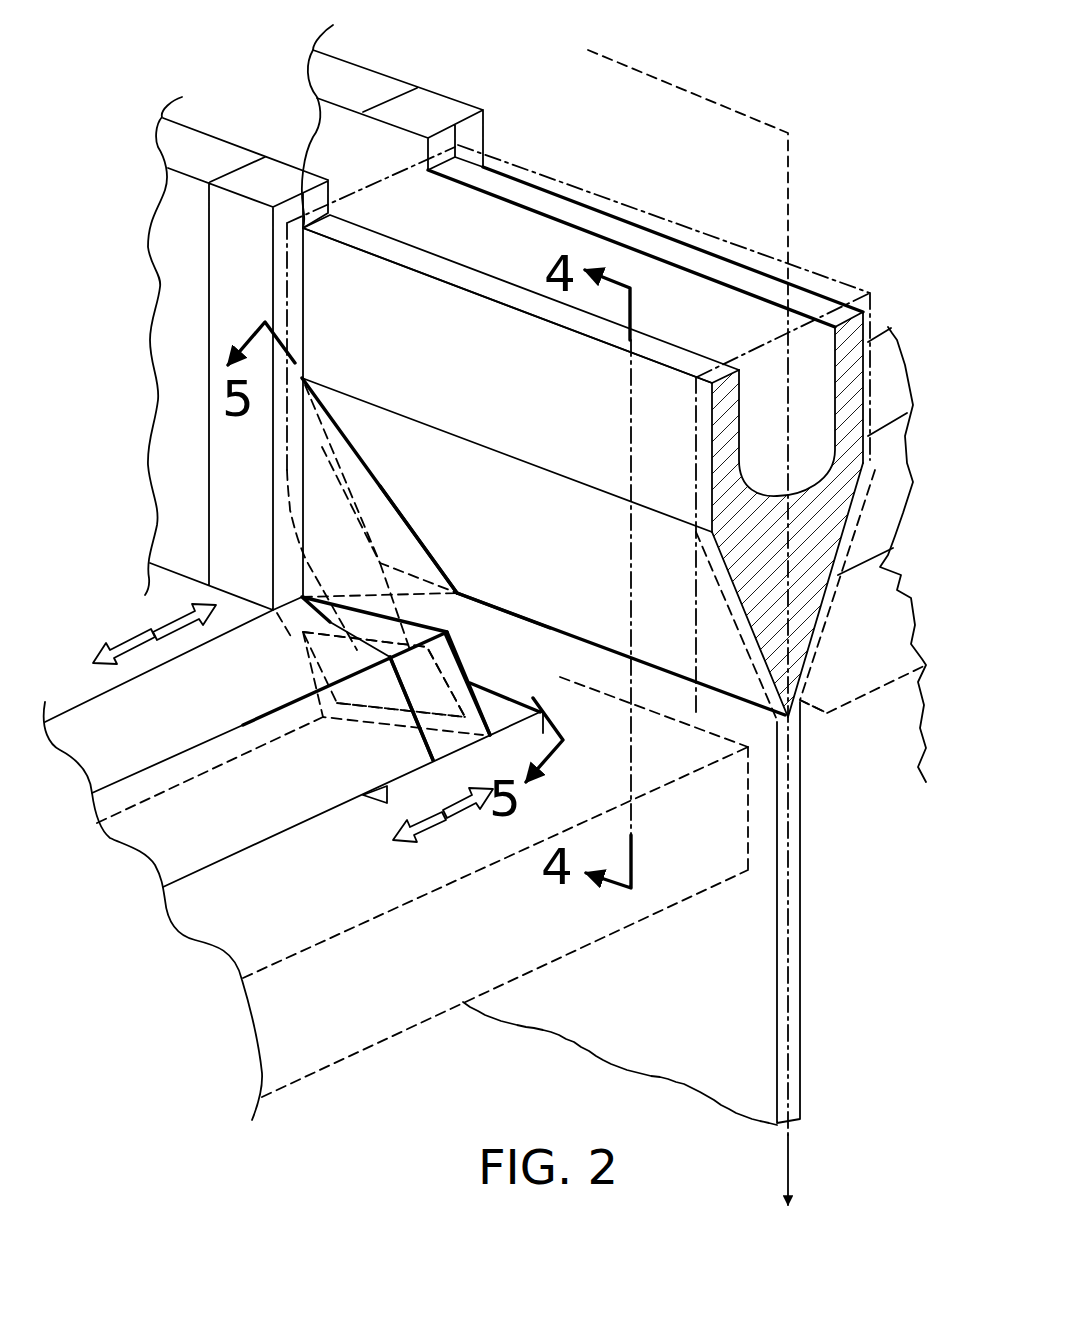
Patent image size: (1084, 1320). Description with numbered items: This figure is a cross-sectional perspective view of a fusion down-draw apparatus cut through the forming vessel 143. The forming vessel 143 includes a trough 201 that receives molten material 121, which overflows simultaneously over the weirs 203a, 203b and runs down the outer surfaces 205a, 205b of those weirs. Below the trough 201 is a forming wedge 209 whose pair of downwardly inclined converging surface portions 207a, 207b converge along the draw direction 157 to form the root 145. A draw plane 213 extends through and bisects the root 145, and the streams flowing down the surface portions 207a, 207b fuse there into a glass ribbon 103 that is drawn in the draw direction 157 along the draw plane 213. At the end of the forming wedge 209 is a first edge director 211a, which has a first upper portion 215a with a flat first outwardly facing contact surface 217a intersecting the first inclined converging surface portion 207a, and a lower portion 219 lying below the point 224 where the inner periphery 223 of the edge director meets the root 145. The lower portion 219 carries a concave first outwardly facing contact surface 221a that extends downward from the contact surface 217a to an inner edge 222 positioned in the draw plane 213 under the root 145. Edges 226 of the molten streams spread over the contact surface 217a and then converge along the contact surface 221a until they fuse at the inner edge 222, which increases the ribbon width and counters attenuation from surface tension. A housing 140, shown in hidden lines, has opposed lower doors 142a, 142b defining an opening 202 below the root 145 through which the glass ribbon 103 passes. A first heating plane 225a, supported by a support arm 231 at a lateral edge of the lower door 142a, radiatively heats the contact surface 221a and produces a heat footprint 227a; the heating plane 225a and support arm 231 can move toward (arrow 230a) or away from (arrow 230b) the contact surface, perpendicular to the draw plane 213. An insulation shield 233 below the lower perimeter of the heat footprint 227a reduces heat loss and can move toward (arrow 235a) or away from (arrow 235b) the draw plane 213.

The glass ribbon 103 is at (800, 994).
The molten material 121 is at (822, 390).
The housing 140 is at (369, 1072).
The lower door 142a is at (546, 943).
The lower door 142b is at (878, 818).
The forming vessel 143 is at (517, 192).
The root 145 is at (795, 720).
The draw direction 157 is at (793, 1166).
The trough 201 is at (817, 424).
The opening 202 is at (748, 866).
The weir 203a is at (708, 356).
The weir 203b is at (808, 290).
The outer surface of weir 205a is at (706, 432).
The outer surface of weir 205b is at (872, 366).
The first inclined converging surface portion 207a is at (728, 579).
The second inclined converging surface portion 207b is at (821, 620).
The forming wedge 209 is at (818, 580).
The first edge director 211a is at (388, 452).
The draw plane 213 is at (790, 134).
The first upper portion 215a is at (391, 518).
The first outwardly facing contact surface 217a is at (328, 440).
The lower portion 219 is at (465, 628).
The first outwardly facing contact surface 221a is at (393, 612).
The inner edge 222 is at (456, 617).
The inner periphery 223 is at (383, 484).
The point 224 is at (458, 595).
The first heating plane 225a is at (462, 674).
The edges of the streams of molten material 226 is at (308, 562).
The heat footprint 227a is at (377, 713).
The adjustment direction toward contact surface 230a is at (188, 642).
The adjustment direction away from contact surface 230b is at (113, 642).
The support arm 231 is at (95, 716).
The insulation shield 233 is at (378, 804).
The direction toward draw plane 235a is at (462, 838).
The direction away from draw plane 235b is at (421, 850).